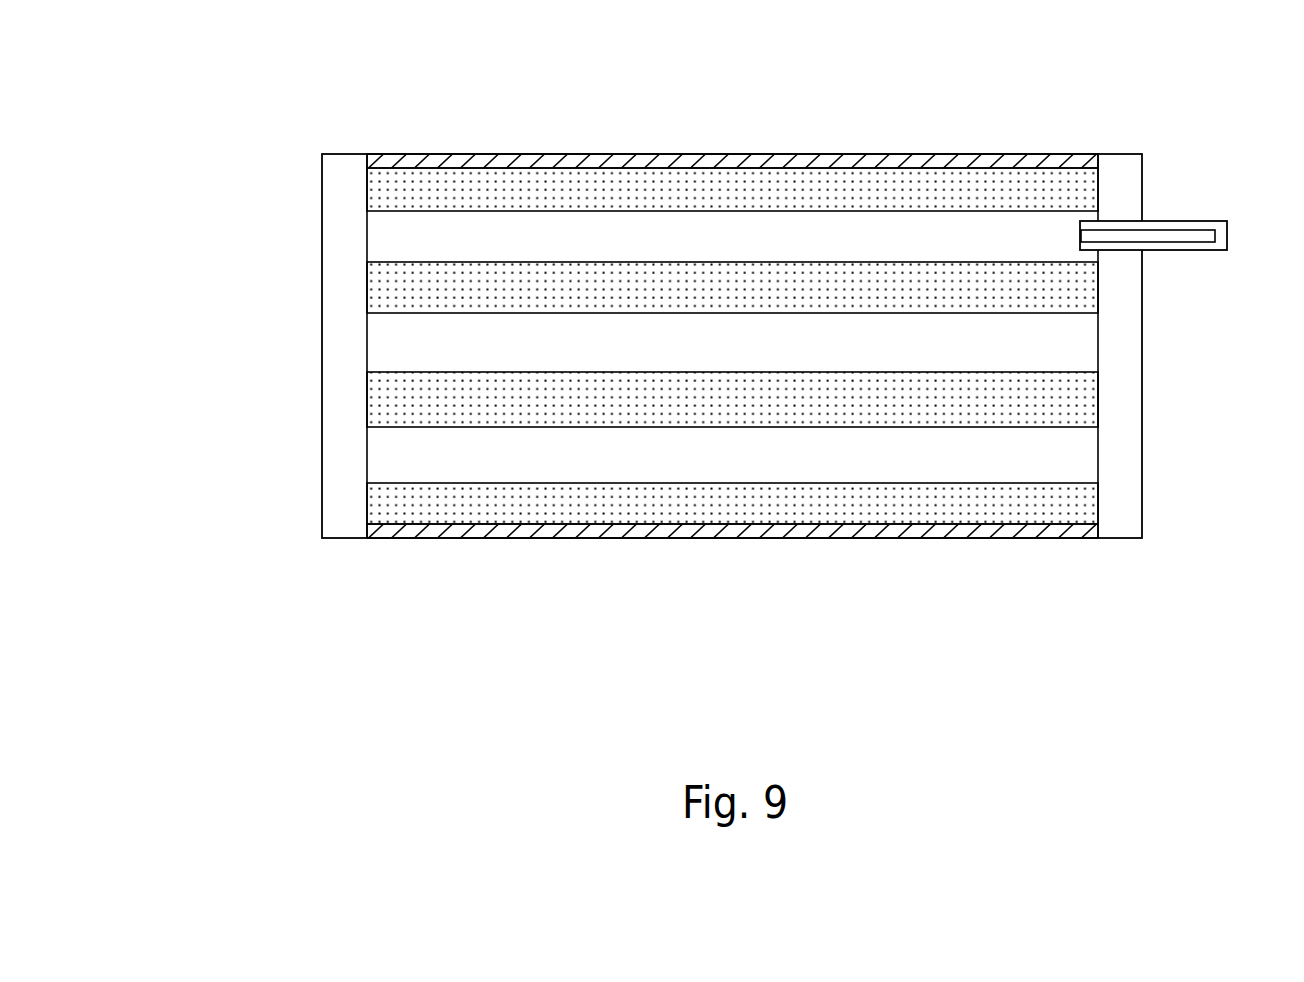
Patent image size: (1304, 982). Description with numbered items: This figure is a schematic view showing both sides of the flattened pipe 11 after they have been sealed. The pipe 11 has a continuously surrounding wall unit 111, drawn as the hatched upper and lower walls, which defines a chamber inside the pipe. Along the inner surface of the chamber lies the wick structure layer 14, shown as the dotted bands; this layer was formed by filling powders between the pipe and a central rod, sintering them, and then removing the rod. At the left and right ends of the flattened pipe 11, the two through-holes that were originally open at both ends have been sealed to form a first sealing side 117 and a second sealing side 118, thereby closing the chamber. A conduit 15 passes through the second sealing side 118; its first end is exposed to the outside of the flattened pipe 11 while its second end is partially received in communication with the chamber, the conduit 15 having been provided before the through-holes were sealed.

The pipe 11 is at (759, 276).
The wall unit 111 is at (545, 160).
The wick structure layer 14 is at (395, 287).
The conduit 15 is at (1198, 220).
The first sealing side 117 is at (352, 438).
The second sealing side 118 is at (1123, 403).